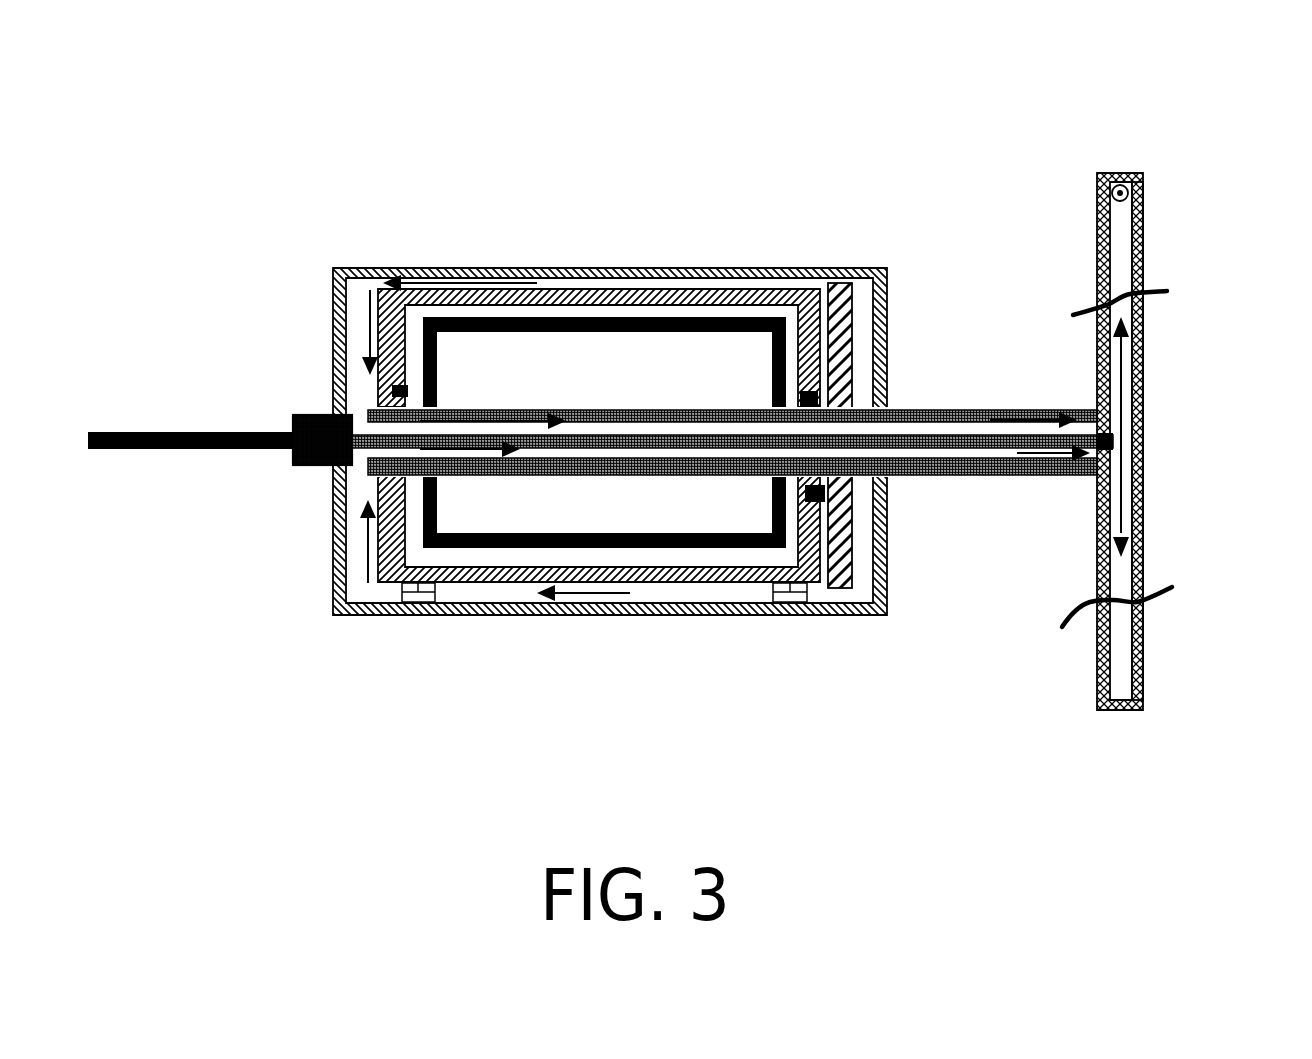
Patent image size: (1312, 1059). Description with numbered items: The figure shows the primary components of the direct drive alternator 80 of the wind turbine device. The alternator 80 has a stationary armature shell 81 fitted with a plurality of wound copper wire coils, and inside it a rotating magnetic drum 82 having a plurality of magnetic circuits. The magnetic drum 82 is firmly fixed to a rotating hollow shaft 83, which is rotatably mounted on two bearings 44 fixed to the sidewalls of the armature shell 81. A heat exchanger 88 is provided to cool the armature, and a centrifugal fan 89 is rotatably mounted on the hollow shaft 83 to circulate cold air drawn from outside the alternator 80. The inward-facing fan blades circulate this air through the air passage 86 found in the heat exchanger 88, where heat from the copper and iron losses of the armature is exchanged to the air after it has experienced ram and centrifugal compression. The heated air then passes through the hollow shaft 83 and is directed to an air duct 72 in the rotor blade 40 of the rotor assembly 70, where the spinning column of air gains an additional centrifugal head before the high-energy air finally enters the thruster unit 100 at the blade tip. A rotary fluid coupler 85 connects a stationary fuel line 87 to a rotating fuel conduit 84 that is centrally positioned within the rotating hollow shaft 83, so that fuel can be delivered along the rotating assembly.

The leeward rotor blade 40 is at (1147, 502).
The bearing 44 is at (390, 387).
The rotor assembly 70 is at (1227, 285).
The air duct 72 is at (1127, 674).
The alternator 80 is at (572, 245).
The stationary armature shell 81 is at (645, 292).
The rotating magnetic drum 82 is at (423, 537).
The rotating hollow shaft 83 is at (1025, 405).
The rotating fuel conduit 84 is at (1008, 432).
The rotary fluid coupler 85 is at (293, 460).
The air passage 86 is at (363, 325).
The stationary fuel line 87 is at (133, 450).
The heat exchanger 88 is at (513, 615).
The centrifugal fan 89 is at (855, 342).
The thruster unit 100 is at (1103, 185).